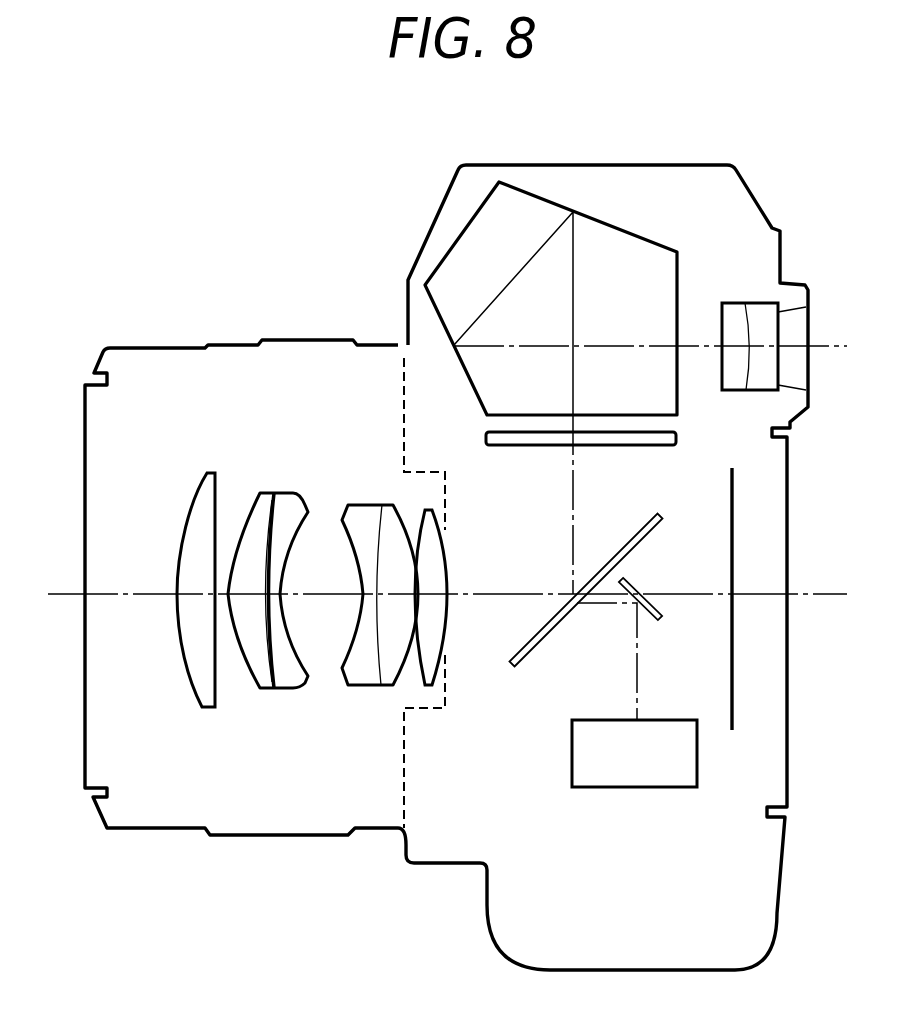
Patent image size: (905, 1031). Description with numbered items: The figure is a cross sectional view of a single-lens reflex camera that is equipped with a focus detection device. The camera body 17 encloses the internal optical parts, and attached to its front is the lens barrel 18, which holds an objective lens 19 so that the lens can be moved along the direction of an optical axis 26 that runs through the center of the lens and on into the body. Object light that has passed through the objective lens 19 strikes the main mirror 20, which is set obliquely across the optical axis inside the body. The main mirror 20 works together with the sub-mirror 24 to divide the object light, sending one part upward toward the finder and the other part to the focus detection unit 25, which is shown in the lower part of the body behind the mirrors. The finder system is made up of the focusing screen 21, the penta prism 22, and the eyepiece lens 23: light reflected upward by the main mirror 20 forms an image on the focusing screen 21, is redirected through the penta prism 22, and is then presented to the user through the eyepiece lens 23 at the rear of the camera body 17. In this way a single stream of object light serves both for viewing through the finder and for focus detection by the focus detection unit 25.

The camera body 17 is at (765, 843).
The lens barrel 18 is at (157, 818).
The objective lens 19 is at (281, 490).
The main mirror 20 is at (530, 650).
The focusing screen 21 is at (510, 437).
The penta prism 22 is at (612, 243).
The eyepiece lens 23 is at (733, 320).
The sub-mirror 24 is at (638, 590).
The focus detection unit 25 is at (676, 720).
The optical axis 26 is at (112, 590).